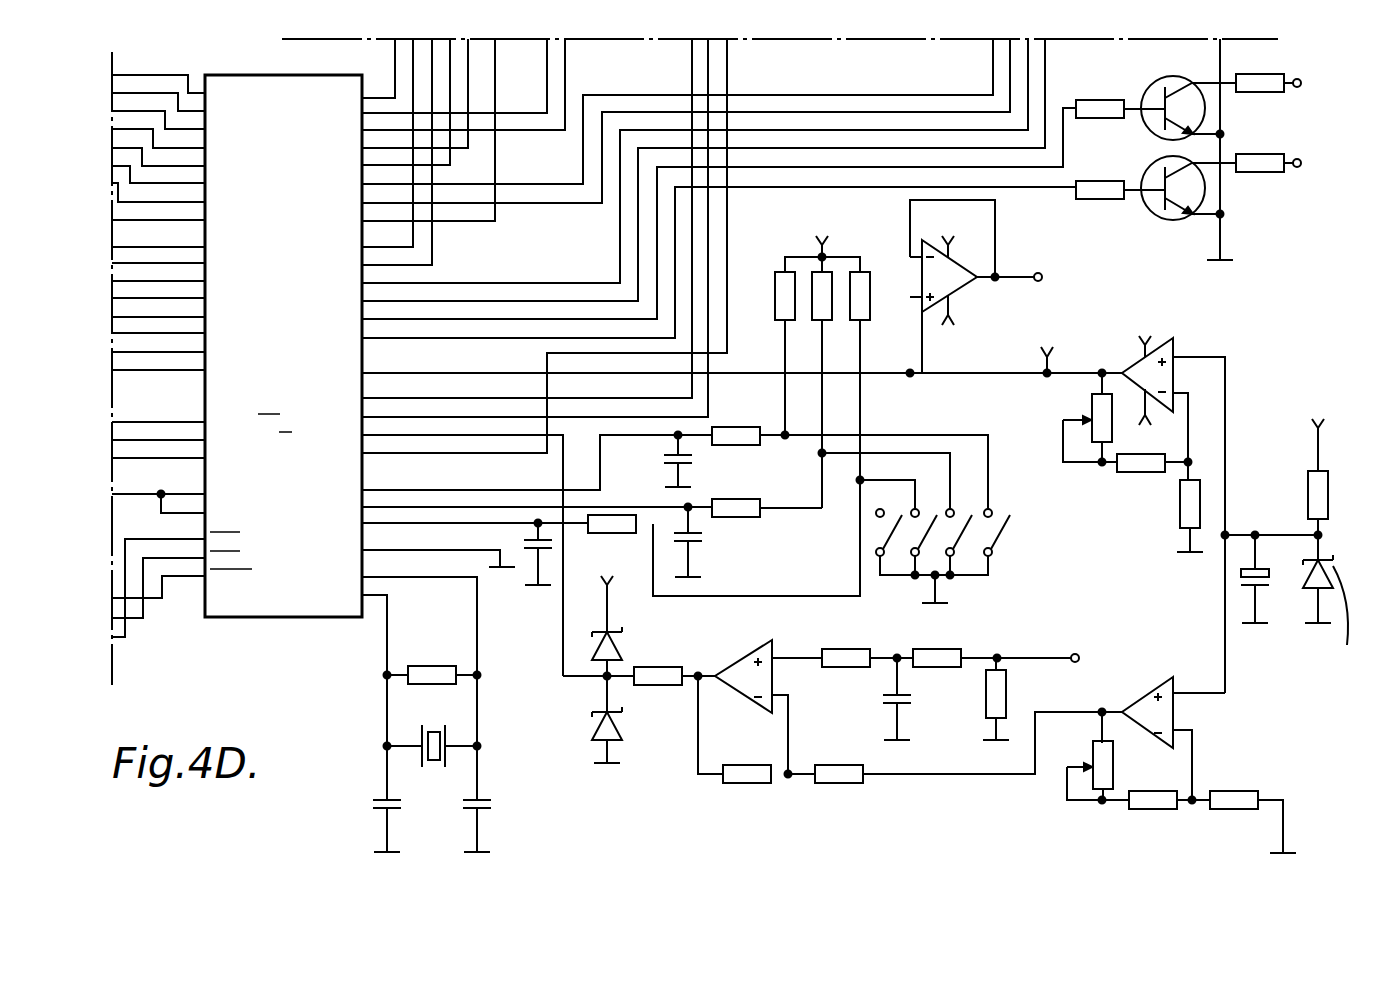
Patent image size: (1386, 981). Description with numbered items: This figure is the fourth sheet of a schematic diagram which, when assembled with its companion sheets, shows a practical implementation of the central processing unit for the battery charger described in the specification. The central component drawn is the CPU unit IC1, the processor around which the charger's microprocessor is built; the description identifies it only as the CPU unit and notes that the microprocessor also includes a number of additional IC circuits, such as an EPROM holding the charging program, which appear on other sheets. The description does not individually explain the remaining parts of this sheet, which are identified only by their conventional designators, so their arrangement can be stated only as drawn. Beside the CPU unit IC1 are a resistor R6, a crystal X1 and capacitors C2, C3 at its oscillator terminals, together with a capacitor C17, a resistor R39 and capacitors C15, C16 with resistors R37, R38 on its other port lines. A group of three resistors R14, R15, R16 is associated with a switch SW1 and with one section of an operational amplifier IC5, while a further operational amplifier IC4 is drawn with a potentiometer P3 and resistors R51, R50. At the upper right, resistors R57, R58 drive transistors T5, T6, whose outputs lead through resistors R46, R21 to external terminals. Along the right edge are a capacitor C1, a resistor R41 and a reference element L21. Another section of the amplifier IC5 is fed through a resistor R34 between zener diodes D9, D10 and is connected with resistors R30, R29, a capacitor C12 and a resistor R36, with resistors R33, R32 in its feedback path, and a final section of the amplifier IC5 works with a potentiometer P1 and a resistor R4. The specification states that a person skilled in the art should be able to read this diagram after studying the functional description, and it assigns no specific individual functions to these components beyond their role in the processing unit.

The CPU unit IC1 is at (273, 588).
The resistor R6 is at (438, 676).
The crystal X1 is at (418, 736).
The capacitor C2 is at (380, 811).
The capacitor C3 is at (481, 811).
The capacitor C17 is at (531, 537).
The resistor R39 is at (613, 527).
The capacitor C15 is at (692, 463).
The capacitor C16 is at (694, 548).
The resistor R37 is at (728, 432).
The resistor R38 is at (738, 513).
The resistor R14 is at (782, 290).
The resistor R15 is at (822, 312).
The resistor R16 is at (867, 307).
The operational amplifier IC5 is at (952, 277).
The operational amplifier IC4 is at (1140, 368).
The resistor R57 is at (1103, 108).
The resistor R58 is at (1117, 190).
The transistor T5 is at (1152, 98).
The transistor T6 is at (1152, 200).
The resistor R46 is at (1277, 84).
The resistor R21 is at (1268, 152).
The potentiometer P3 is at (1097, 408).
The resistor R51 is at (1137, 470).
The resistor R50 is at (1187, 512).
The switch SW1 is at (1012, 513).
The capacitor C1 is at (1262, 569).
The resistor R41 is at (1315, 490).
The zener diode voltage reference L21 is at (1307, 592).
The zener diode D9 is at (592, 648).
The zener diode D10 is at (592, 730).
The resistor R34 is at (660, 674).
The resistor R30 is at (848, 657).
The resistor R29 is at (930, 657).
The capacitor C12 is at (889, 703).
The resistor R36 is at (993, 699).
The resistor R33 is at (742, 775).
The resistor R32 is at (838, 778).
The potentiometer P1 is at (1102, 757).
The resistor R4 is at (1228, 802).